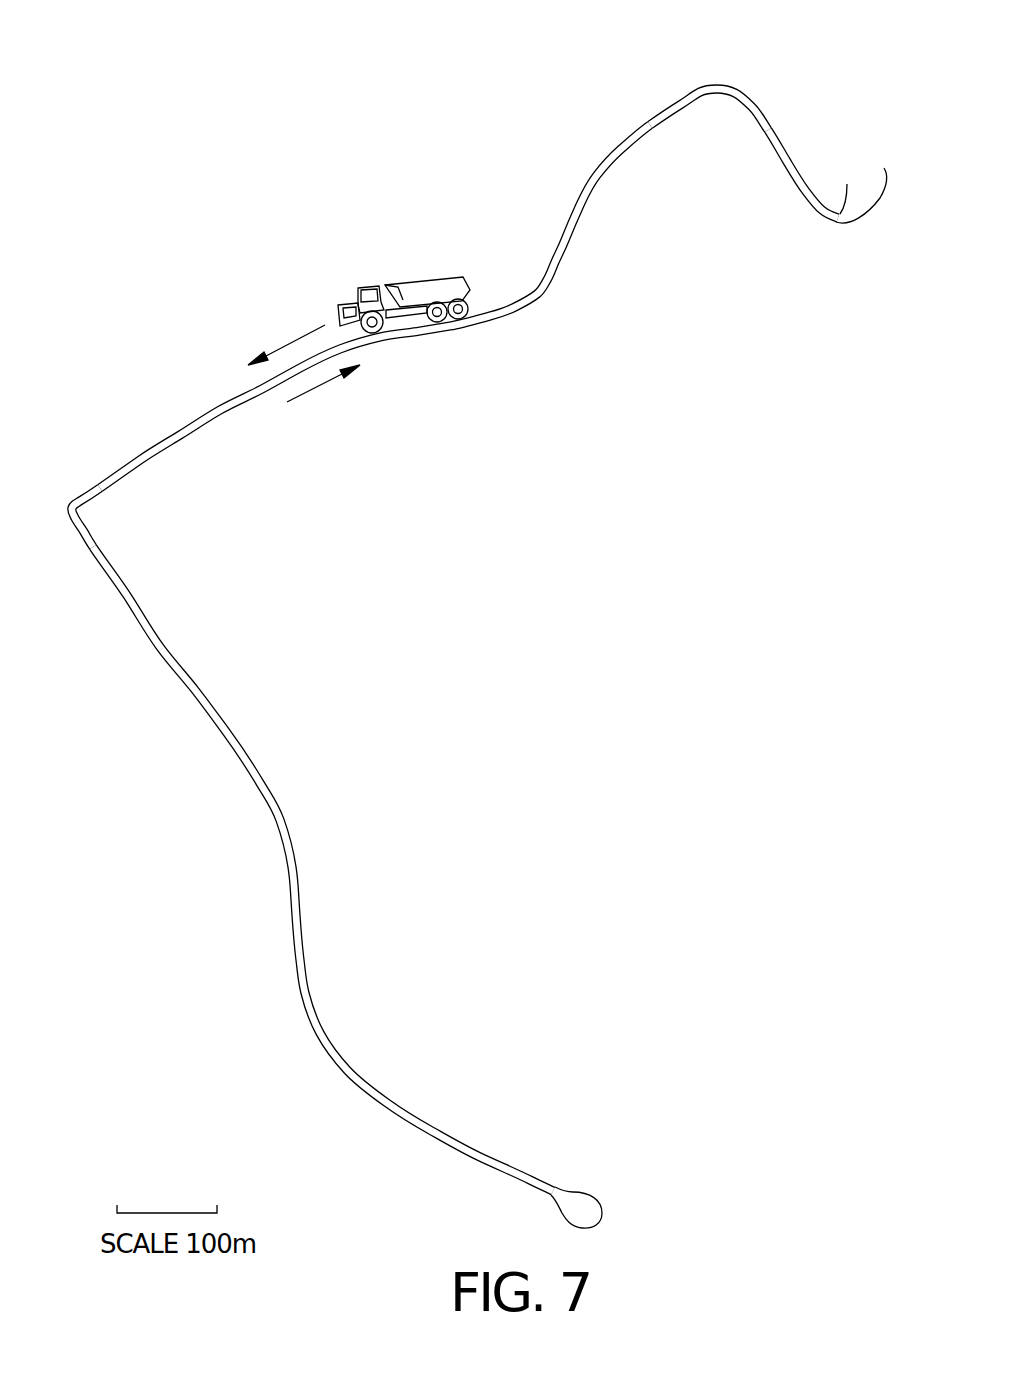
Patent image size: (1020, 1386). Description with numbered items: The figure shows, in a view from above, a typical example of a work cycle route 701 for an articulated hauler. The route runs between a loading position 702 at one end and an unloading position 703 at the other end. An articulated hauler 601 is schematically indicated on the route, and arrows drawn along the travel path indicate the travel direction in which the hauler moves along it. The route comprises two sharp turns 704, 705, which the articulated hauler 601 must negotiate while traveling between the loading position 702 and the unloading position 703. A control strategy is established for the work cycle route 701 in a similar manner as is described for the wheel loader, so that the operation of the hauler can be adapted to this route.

The articulated hauler 601 is at (419, 290).
The work cycle route 701 is at (273, 280).
The loading position 702 is at (590, 1210).
The unloading position 703 is at (863, 167).
The sharp turn 704 is at (67, 508).
The sharp turn 705 is at (700, 84).